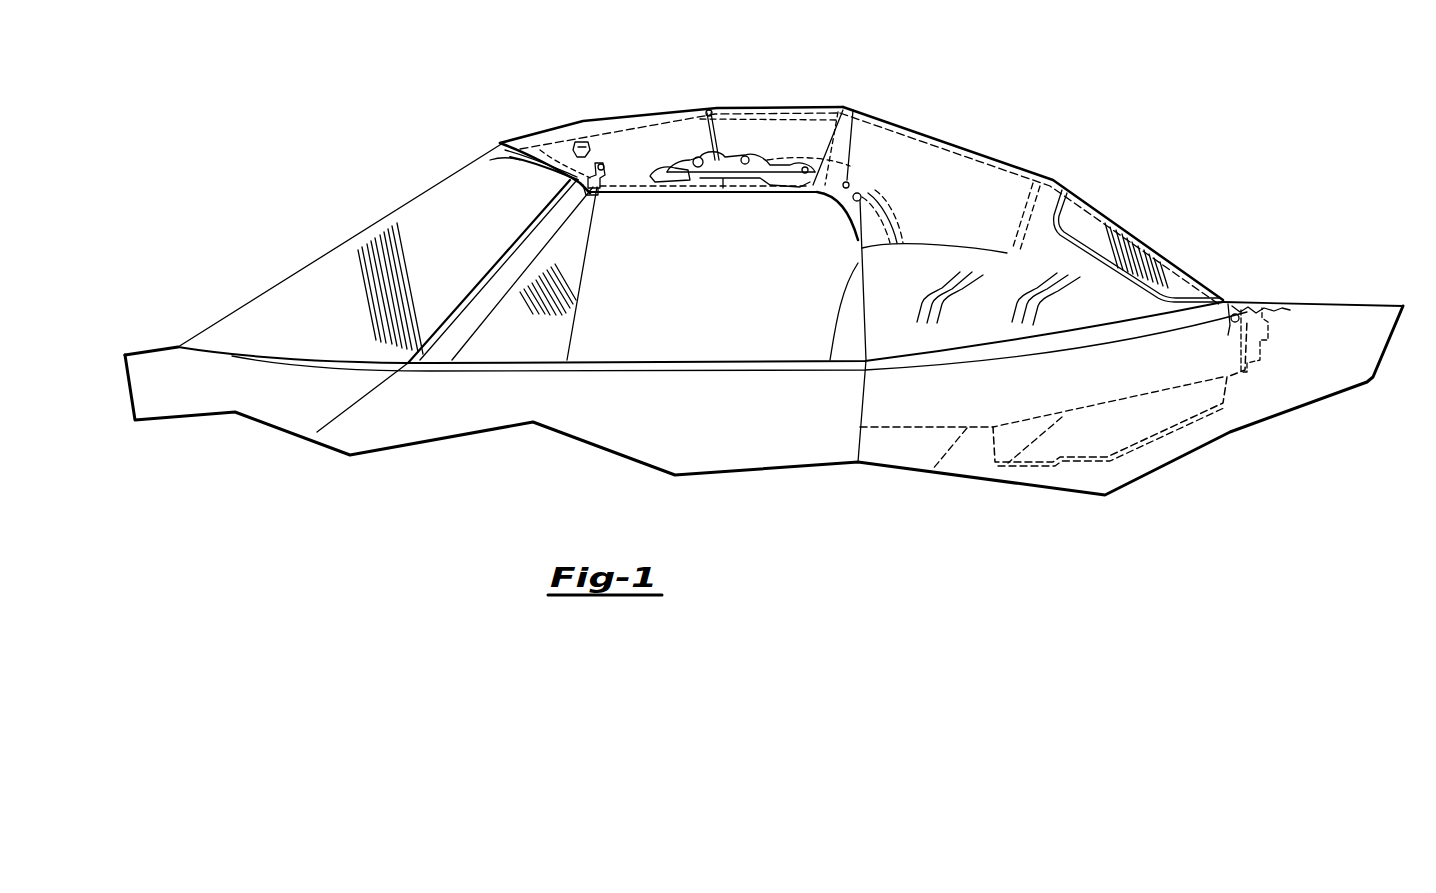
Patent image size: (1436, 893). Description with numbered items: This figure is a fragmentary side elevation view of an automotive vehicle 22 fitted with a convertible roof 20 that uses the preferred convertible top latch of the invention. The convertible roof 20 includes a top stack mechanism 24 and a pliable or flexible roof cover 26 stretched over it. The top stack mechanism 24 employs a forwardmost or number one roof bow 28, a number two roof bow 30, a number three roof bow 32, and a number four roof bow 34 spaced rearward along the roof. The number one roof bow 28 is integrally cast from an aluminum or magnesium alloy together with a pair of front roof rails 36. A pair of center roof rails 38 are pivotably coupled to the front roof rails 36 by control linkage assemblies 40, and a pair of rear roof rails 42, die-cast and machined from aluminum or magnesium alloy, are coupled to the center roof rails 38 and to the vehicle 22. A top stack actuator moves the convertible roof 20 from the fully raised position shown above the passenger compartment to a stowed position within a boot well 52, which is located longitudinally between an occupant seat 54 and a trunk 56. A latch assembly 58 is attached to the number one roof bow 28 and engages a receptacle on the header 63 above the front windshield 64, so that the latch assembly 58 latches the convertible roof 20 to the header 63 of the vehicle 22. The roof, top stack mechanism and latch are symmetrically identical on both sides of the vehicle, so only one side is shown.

The convertible roof 20 is at (1137, 130).
The automotive vehicle 22 is at (180, 407).
The top stack mechanism 24 is at (868, 82).
The roof cover 26 is at (968, 148).
The number one roof bow 28 is at (570, 132).
The number two roof bow 30 is at (713, 108).
The number three roof bow 32 is at (860, 145).
The number four roof bow 34 is at (1055, 178).
The front roof rails 36 is at (657, 178).
The center roof rails 38 is at (723, 188).
The control linkage assemblies 40 is at (690, 147).
The rear roof rails 42 is at (860, 232).
The boot well 52 is at (1143, 423).
The occupant seat 54 is at (842, 318).
The trunk 56 is at (1310, 333).
The latch assembly 58 is at (610, 200).
The header 63 is at (520, 162).
The front windshield 64 is at (322, 273).